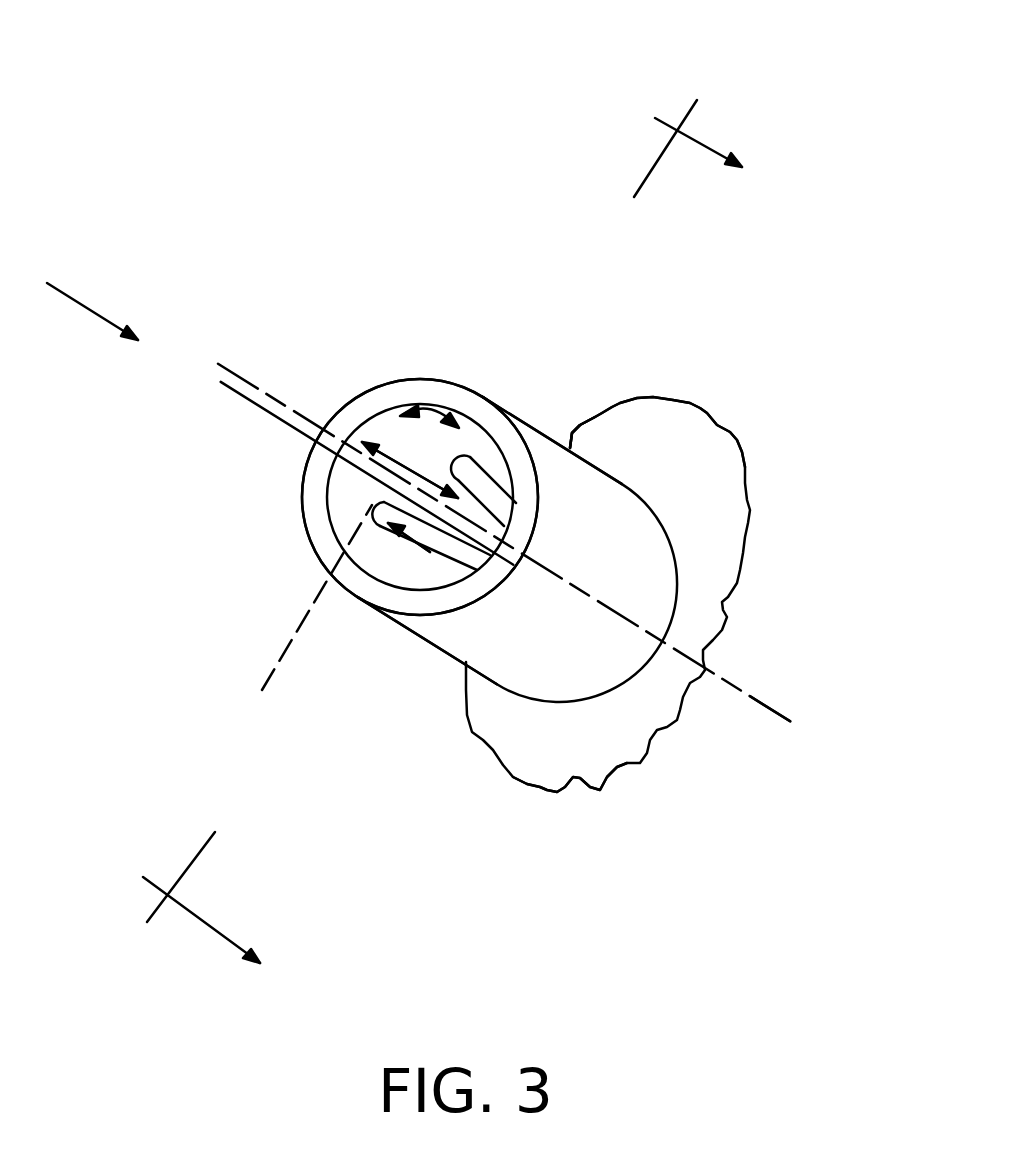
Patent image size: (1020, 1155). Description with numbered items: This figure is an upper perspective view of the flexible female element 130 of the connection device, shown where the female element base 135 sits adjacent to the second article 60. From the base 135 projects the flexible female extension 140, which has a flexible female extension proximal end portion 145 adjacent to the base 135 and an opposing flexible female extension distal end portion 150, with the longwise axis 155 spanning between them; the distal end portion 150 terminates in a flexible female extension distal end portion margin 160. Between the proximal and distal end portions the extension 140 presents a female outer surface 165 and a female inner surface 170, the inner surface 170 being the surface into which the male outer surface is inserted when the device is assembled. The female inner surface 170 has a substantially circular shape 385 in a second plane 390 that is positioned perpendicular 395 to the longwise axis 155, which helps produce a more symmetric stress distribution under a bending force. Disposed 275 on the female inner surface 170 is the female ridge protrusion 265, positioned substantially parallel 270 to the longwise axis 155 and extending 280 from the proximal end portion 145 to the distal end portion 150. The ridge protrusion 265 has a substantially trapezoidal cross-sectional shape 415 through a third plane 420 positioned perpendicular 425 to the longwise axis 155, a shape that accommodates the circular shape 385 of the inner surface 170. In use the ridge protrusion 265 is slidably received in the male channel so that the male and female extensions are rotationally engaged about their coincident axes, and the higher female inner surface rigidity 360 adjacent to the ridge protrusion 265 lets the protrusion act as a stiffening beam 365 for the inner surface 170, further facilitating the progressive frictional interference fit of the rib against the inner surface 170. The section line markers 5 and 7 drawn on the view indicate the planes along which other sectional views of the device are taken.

The flexible female element 130 is at (509, 92).
The female inner surface 170 is at (416, 410).
The flexible female extension distal end portion margin 160 is at (345, 580).
The flexible female extension distal end portion 150 is at (391, 609).
The substantially circular shape 385 is at (506, 320).
The second plane 390 is at (417, 460).
The female ridge protrusion 265 is at (470, 458).
The substantially trapezoidal cross-sectional shape 415 is at (526, 391).
The third plane 420 is at (483, 481).
The higher female inner surface rigidity 360 is at (400, 452).
The perpendicular positioning of the second plane 395 is at (321, 555).
The perpendicular positioning of the third plane 425 is at (362, 520).
The extension of the female ridge protrusion 280 is at (360, 616).
The stiffening beam 365 is at (415, 553).
The substantially parallel positioning 270 is at (270, 335).
The disposition on the female inner surface 275 is at (316, 484).
The longwise axis 155 is at (773, 723).
The flexible female extension 140 is at (548, 444).
The second article 60 is at (698, 500).
The female element base 135 is at (657, 458).
The female outer surface 165 is at (561, 440).
The flexible female extension proximal end portion 145 is at (592, 682).
The section line 5 is at (452, 539).
The section line 7 is at (103, 320).